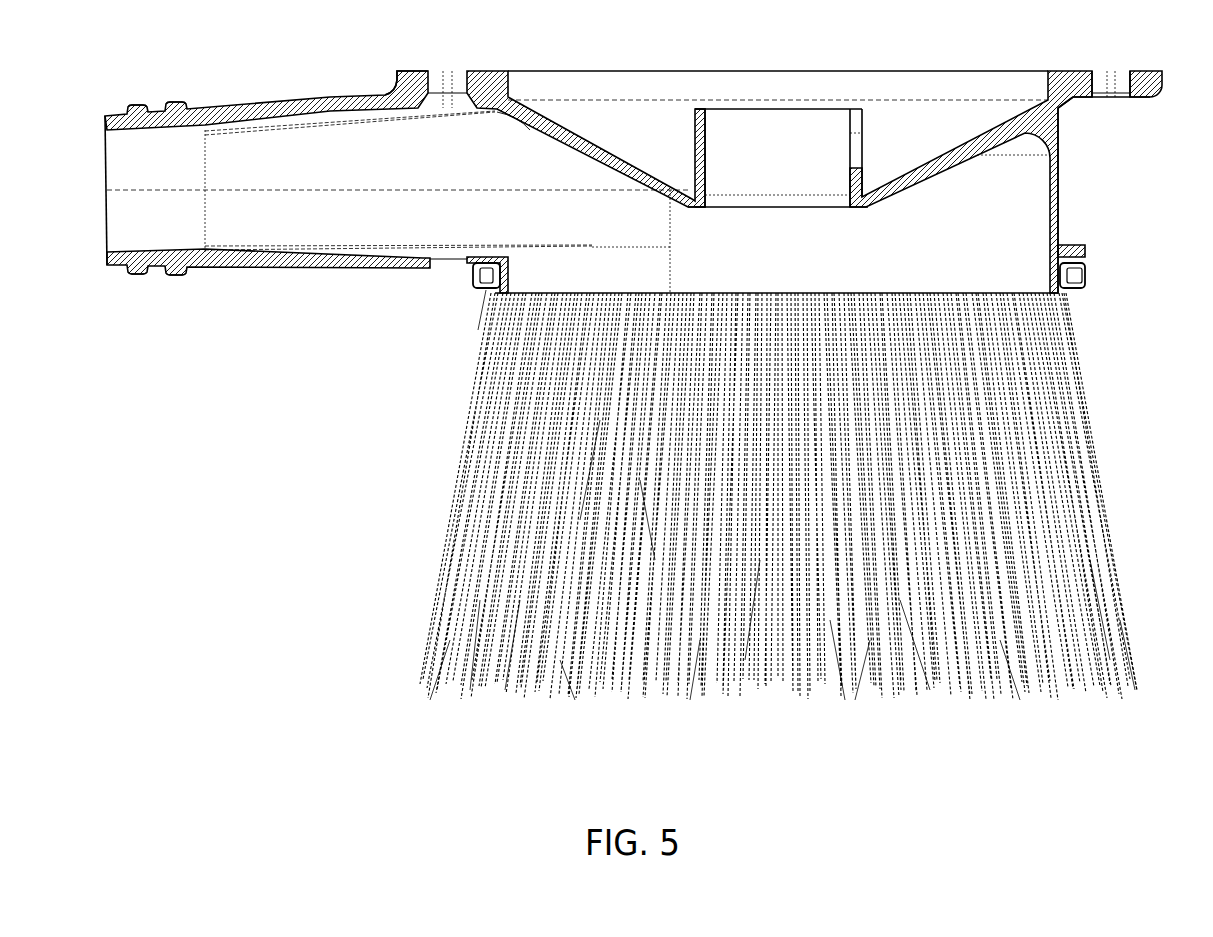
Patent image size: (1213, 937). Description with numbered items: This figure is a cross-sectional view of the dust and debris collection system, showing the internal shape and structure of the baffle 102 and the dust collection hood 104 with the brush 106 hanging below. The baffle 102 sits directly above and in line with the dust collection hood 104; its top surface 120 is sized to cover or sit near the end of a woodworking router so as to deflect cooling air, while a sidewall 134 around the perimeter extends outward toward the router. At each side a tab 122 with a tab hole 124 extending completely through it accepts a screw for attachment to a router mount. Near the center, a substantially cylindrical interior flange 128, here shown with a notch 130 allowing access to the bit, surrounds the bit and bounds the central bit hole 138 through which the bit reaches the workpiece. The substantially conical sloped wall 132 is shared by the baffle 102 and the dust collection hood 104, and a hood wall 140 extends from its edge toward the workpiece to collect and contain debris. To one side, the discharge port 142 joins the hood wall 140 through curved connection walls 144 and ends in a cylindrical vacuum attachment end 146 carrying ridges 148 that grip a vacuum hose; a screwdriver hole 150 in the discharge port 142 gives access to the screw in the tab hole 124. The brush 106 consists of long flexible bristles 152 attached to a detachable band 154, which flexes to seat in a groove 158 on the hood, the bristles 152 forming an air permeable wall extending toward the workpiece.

The baffle 102 is at (1113, 102).
The dust collection hood 104 is at (1067, 214).
The brush 106 is at (1106, 462).
The top surface 120 is at (560, 110).
The tab 122 is at (417, 70).
The tab hole 124 is at (447, 70).
The interior flange 128 is at (694, 128).
The notch 130 is at (860, 125).
The sloped wall 132 is at (990, 130).
The sidewall 134 is at (625, 92).
The central bit hole 138 is at (783, 205).
The hood wall 140 is at (1062, 235).
The discharge port 142 is at (270, 86).
The curved connection walls 144 is at (306, 272).
The vacuum attachment end 146 is at (100, 115).
The ridge 148 is at (175, 277).
The screwdriver hole 150 is at (448, 264).
The bristles 152 is at (1110, 547).
The detachable band 154 is at (467, 281).
The groove 158 is at (1086, 275).